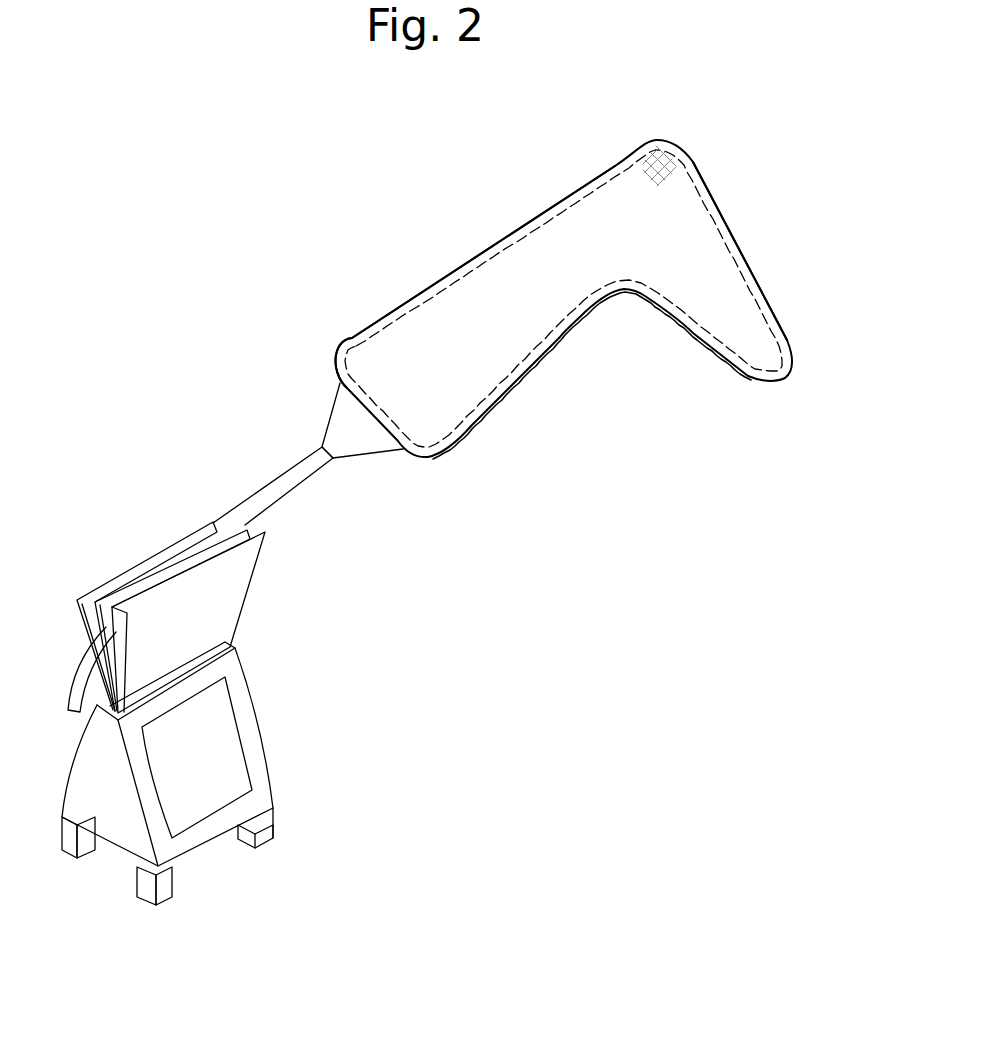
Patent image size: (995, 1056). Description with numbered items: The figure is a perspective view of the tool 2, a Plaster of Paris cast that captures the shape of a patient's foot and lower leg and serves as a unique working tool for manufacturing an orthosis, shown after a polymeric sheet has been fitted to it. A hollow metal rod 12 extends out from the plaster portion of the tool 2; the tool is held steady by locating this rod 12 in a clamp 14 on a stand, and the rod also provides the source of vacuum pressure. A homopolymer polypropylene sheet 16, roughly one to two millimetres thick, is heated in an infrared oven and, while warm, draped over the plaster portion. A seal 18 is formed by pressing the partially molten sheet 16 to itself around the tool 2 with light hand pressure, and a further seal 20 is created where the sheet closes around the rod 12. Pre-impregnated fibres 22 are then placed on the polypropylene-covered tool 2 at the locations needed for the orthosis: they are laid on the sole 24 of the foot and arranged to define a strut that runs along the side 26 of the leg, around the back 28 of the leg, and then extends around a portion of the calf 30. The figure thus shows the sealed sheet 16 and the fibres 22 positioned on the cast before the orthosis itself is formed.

The tool 2 is at (290, 238).
The metal rod 12 is at (304, 488).
The clamp plates of the stand 14 is at (140, 570).
The polypropylene sheet 16 is at (342, 342).
The seal 18 is at (583, 316).
The further seal 20 is at (316, 456).
The pre-impregnated fibres 22 is at (676, 144).
The sole 24 is at (730, 233).
The side 26 is at (597, 220).
The back 28 is at (498, 238).
The calf 30 is at (425, 332).